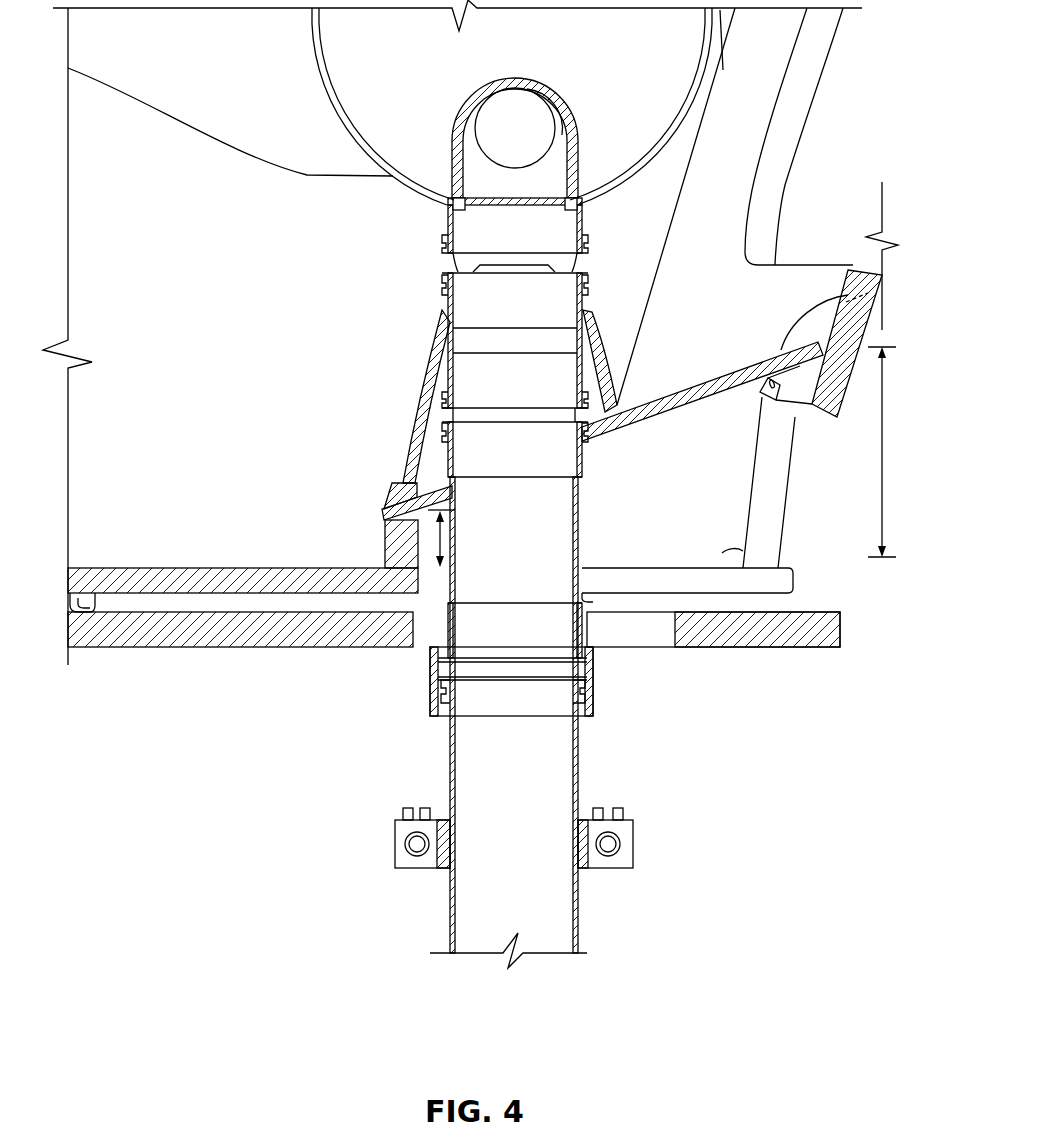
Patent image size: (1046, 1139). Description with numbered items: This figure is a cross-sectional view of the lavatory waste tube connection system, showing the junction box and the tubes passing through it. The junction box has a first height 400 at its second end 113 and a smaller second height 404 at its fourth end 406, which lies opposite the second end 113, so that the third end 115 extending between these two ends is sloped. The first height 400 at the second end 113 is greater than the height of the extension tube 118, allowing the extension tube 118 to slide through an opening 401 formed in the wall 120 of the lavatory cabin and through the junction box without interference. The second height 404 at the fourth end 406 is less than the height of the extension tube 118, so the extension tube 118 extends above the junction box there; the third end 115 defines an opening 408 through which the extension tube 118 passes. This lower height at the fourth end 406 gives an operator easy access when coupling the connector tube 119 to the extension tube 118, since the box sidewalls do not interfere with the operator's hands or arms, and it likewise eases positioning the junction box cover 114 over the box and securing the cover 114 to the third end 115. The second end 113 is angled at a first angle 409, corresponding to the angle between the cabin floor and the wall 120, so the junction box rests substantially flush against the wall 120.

The second end 113 is at (747, 540).
The junction box cover 114 is at (722, 377).
The third end 115 is at (853, 293).
The extension tube 118 is at (552, 555).
The connector tube 119 is at (473, 380).
The wall 120 is at (752, 180).
The first height 400 is at (884, 487).
The opening 401 is at (800, 493).
The second height 404 is at (440, 538).
The fourth end 406 is at (384, 533).
The opening 408 is at (684, 395).
The first angle 409 is at (733, 568).